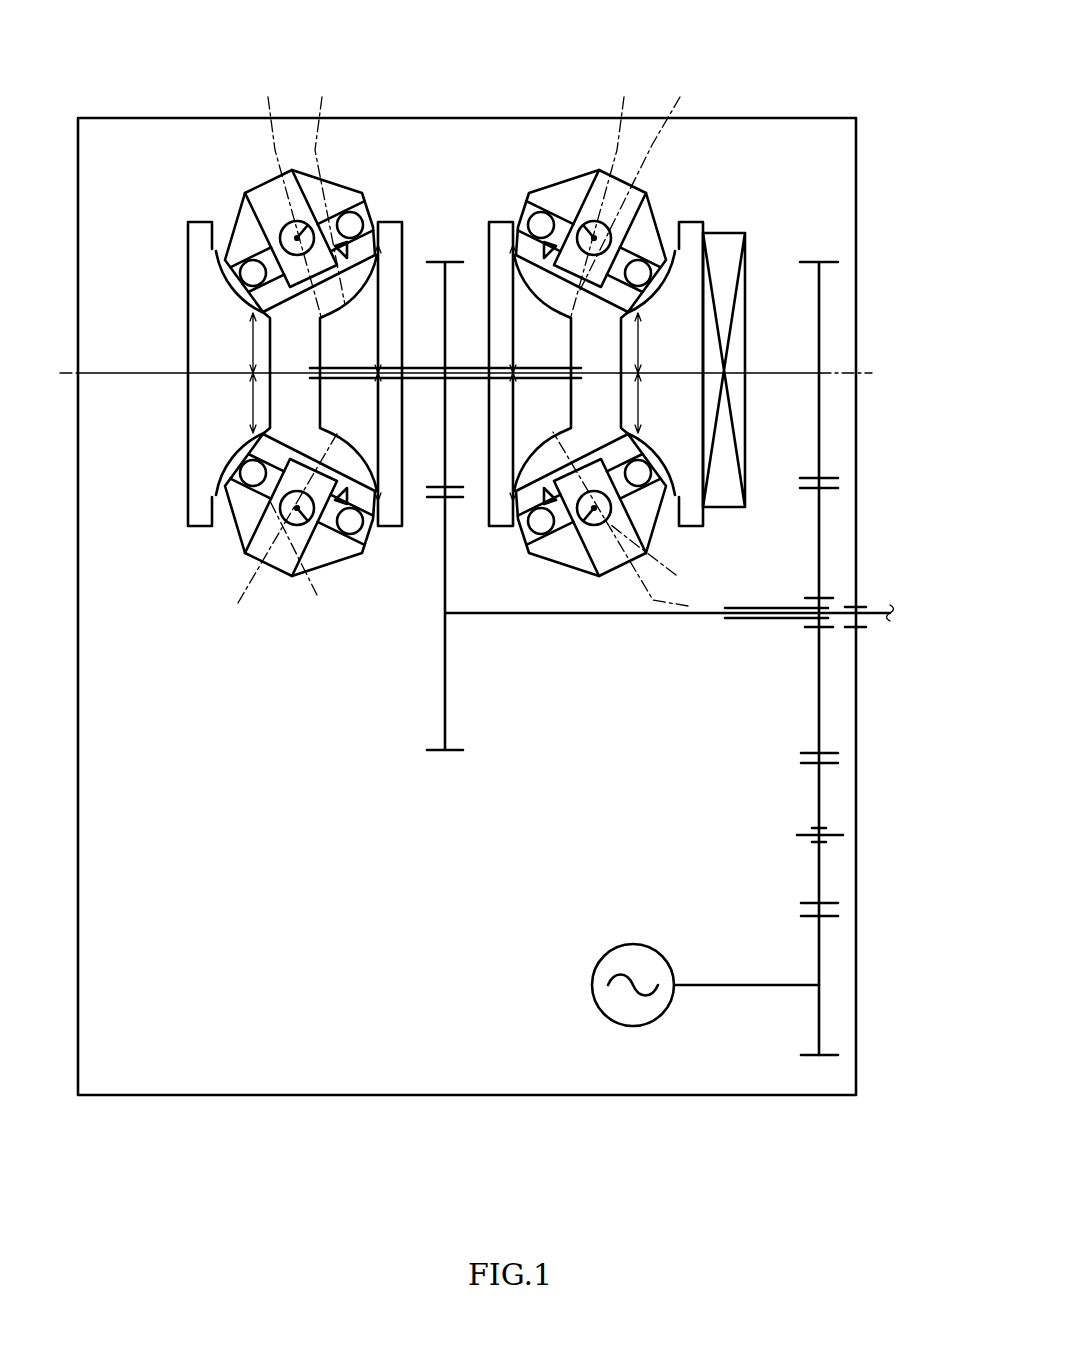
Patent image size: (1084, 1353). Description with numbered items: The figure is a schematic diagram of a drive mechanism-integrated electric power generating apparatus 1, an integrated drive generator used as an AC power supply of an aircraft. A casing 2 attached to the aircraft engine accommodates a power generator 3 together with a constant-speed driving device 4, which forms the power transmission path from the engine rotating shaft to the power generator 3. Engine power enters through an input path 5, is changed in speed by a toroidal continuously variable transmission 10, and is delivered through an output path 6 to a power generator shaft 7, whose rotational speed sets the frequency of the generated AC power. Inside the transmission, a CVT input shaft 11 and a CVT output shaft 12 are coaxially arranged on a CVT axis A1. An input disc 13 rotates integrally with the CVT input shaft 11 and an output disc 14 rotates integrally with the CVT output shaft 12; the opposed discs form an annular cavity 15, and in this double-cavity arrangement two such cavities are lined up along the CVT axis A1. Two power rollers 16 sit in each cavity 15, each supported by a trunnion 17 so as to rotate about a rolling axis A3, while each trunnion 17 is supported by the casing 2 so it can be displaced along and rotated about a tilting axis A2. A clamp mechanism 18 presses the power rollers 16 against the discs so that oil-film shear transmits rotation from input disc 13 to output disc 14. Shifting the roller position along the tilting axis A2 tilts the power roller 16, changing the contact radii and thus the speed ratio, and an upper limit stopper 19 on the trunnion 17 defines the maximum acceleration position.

The drive mechanism-integrated electric power generating apparatus 1 is at (452, 1142).
The casing 2 is at (492, 1097).
The power generator 3 is at (602, 1017).
The constant-speed driving device 4 is at (754, 1077).
The input path 5 is at (504, 748).
The output path 6 is at (817, 1082).
The power generator shaft 7 is at (699, 988).
The toroidal continuously variable transmission 10 is at (420, 190).
The CVT input shaft 11 is at (457, 369).
The CVT output shaft 12 is at (432, 369).
The input disc 13 is at (493, 222).
The output disc 14 is at (697, 222).
The cavity 15 is at (245, 195).
The power roller 16 is at (379, 222).
The trunnion 17 is at (253, 210).
The clamp mechanism 18 is at (745, 423).
The upper limit stopper 19 is at (333, 215).
The CVT axis A1 is at (868, 373).
The tilting axis A2 is at (491, 347).
The rolling axis A3 is at (468, 348).